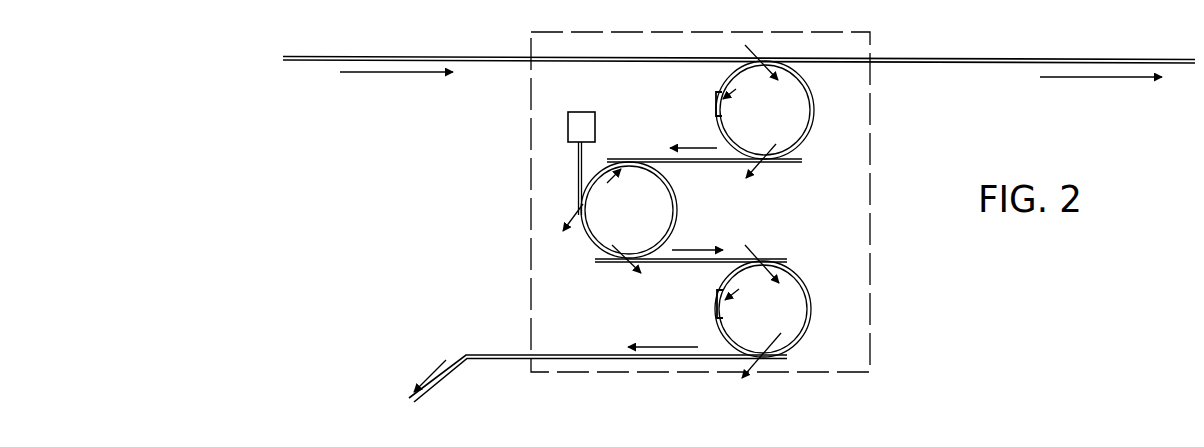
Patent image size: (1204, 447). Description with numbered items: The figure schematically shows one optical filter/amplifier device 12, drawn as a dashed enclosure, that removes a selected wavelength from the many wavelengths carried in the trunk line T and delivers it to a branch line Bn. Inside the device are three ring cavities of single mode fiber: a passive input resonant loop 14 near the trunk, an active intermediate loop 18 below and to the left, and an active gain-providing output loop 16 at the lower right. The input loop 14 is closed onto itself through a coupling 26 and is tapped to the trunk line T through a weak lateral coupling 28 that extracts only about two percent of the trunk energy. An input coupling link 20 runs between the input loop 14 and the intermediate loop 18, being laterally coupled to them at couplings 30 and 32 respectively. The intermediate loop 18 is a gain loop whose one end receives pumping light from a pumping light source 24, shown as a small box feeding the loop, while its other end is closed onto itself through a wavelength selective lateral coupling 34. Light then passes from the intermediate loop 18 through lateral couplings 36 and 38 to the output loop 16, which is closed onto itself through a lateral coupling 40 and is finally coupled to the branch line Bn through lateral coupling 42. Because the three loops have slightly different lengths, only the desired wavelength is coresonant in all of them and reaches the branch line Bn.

The optical filter/amplifier device 12 is at (870, 118).
The input resonant ring cavity 14 is at (820, 100).
The output resonant ring cavity 16 is at (818, 295).
The intermediate loop 18 is at (685, 208).
The input coupling link 20 is at (658, 158).
The pumping light source 24 is at (586, 111).
The coupling 26 is at (715, 112).
The weak lateral coupling 28 is at (781, 60).
The lateral coupling 30 is at (766, 166).
The lateral coupling 32 is at (636, 158).
The wavelength selective lateral coupling 34 is at (579, 205).
The lateral coupling 36 is at (622, 265).
The lateral coupling 38 is at (766, 260).
The lateral coupling 40 is at (717, 303).
The lateral coupling 42 is at (755, 362).
The trunk line T is at (358, 55).
The branch line Bn is at (489, 353).